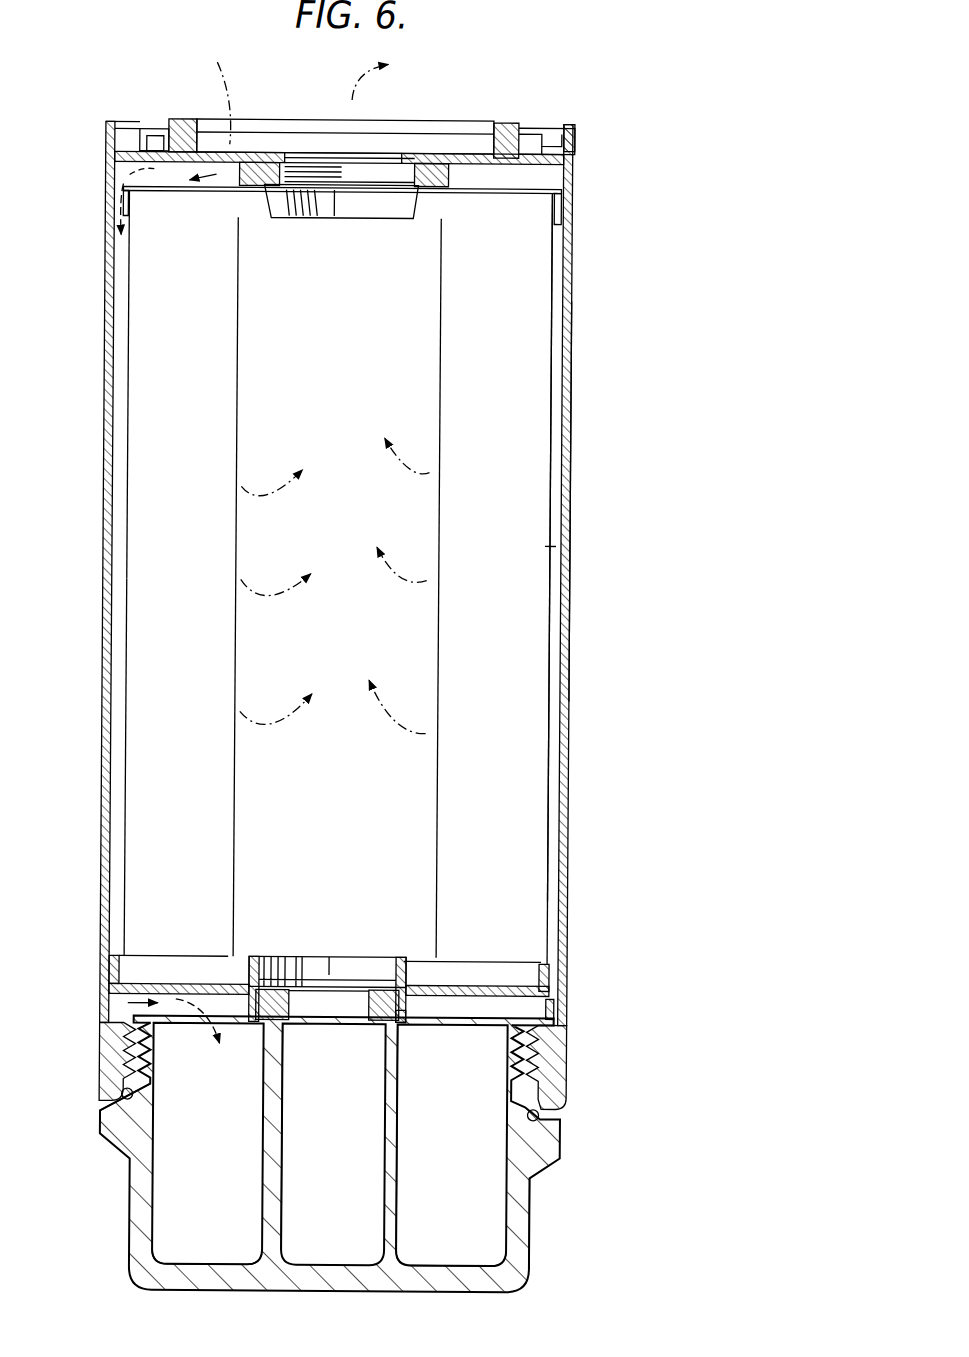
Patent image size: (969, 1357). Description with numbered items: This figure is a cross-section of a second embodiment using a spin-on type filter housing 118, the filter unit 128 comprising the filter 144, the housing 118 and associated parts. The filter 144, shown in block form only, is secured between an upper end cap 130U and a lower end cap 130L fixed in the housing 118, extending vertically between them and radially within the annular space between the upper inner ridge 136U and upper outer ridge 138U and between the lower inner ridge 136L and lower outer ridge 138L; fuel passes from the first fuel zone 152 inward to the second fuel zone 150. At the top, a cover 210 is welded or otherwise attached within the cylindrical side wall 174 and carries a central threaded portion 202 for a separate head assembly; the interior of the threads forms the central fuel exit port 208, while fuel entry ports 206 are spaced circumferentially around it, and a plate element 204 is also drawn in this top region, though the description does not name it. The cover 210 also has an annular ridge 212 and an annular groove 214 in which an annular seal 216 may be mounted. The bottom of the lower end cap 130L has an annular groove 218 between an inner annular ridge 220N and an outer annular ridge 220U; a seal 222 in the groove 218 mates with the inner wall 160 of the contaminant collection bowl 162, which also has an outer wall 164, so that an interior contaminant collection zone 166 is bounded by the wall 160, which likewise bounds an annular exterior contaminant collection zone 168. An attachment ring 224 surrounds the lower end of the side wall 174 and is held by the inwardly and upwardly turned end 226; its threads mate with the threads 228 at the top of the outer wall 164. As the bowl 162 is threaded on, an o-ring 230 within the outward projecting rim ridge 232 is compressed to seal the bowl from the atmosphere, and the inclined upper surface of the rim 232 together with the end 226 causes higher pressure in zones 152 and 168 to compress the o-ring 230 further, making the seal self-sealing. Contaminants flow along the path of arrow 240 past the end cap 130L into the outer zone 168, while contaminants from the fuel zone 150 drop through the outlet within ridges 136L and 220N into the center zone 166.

The filter housing 118 is at (575, 452).
The filter unit 128 is at (126, 292).
The upper end cap 130U is at (478, 198).
The lower end cap 130L is at (168, 982).
The upper inner ridge 136U is at (422, 216).
The lower inner ridge 136L is at (283, 968).
The upper outer ridge 138U is at (562, 207).
The lower outer ridge 138L is at (555, 996).
The filter 144 is at (551, 545).
The second fuel zone 150 is at (320, 768).
The first fuel zone 152 is at (560, 596).
The inner wall 160 is at (400, 1133).
The contaminant collection bowl 162 is at (543, 1228).
The outer wall 164 is at (136, 1202).
The interior contaminant collection zone 166 is at (311, 1228).
The exterior contaminant collection zone 168 is at (487, 1250).
The side wall 174 is at (572, 490).
The threaded portion 202 is at (394, 170).
The cover plate 204 is at (549, 175).
The fuel entry ports 206 is at (194, 150).
The central fuel exit port 208 is at (325, 155).
The cover 210 is at (556, 150).
The annular ridge 212 is at (531, 140).
The annular groove 214 is at (172, 373).
The annular seal 216 is at (177, 203).
The annular groove 218 is at (403, 965).
The outer annular ridge 220U is at (418, 1008).
The inner annular ridge 220N is at (376, 1002).
The seal 222 is at (405, 1030).
The attachment ring 224 is at (140, 1057).
The inwardly and upwardly turned end 226 is at (553, 1109).
The threads 228 is at (164, 1062).
The o-ring 230 is at (130, 1097).
The rim ridge 232 is at (108, 1136).
The arrow 240 is at (118, 1006).